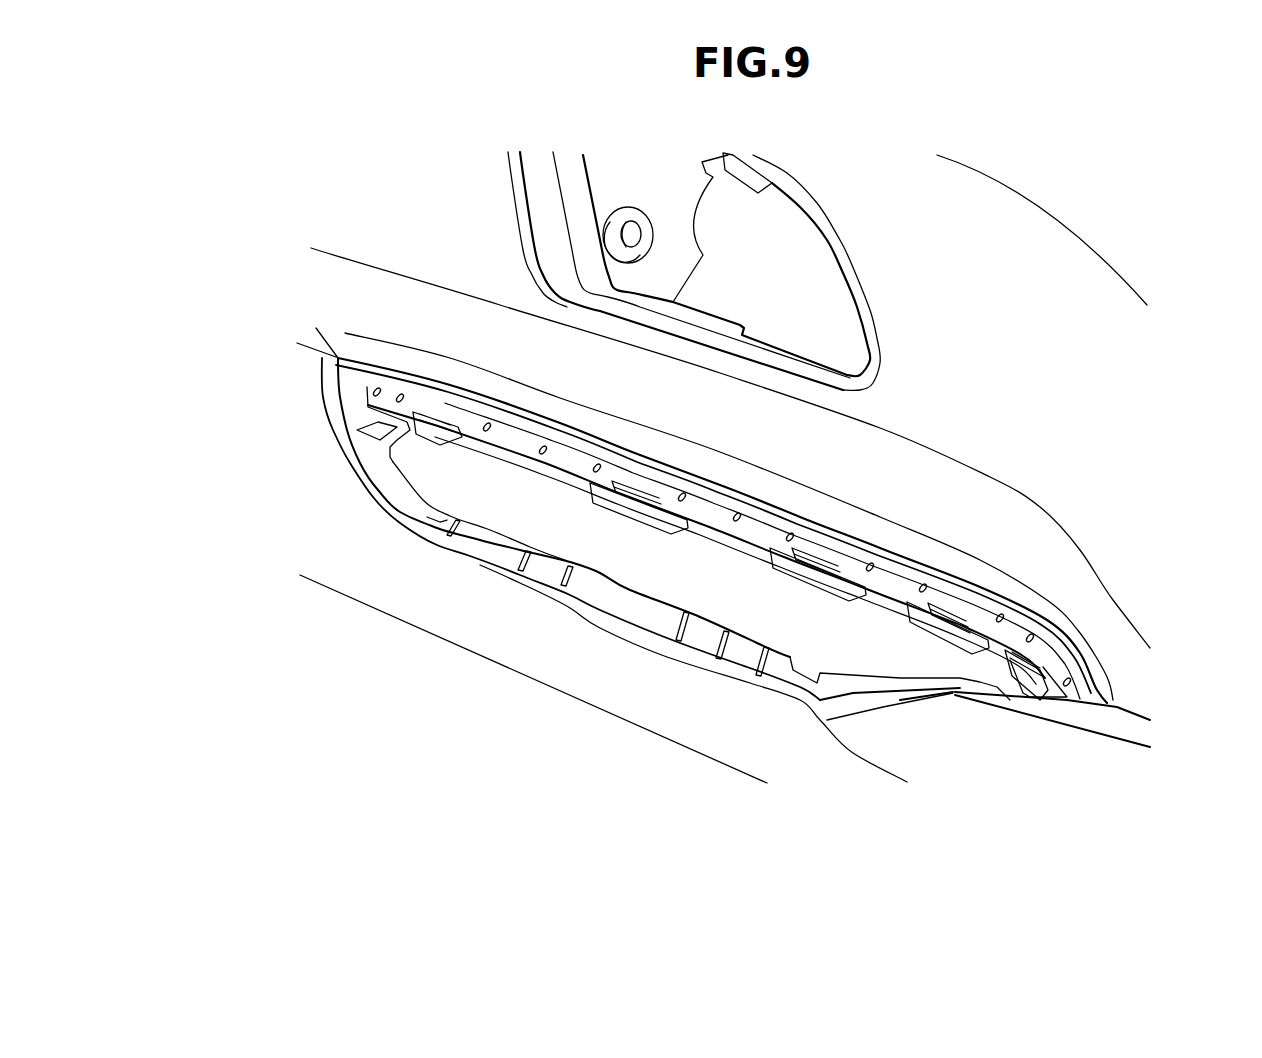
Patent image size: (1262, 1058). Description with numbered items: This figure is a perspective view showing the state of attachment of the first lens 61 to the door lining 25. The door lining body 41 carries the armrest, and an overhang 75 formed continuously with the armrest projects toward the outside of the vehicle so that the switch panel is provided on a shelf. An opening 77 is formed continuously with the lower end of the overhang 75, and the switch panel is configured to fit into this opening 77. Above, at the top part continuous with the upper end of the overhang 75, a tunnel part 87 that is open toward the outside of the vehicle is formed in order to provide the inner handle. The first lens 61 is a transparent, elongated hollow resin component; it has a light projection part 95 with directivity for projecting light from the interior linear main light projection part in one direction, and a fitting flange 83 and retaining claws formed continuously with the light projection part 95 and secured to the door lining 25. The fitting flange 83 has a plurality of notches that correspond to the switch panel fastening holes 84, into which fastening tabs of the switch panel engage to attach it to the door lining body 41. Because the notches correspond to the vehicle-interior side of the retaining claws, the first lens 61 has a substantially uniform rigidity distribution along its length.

The door lining 25 is at (274, 283).
The door lining body 41 is at (952, 215).
The first lens 61 is at (818, 506).
The overhang 75 is at (490, 327).
The opening 77 is at (712, 493).
The fitting flange 83 is at (550, 463).
The switch panel fastening holes 84 is at (450, 425).
The tunnel part 87 is at (540, 163).
The light projection part 95 is at (715, 490).